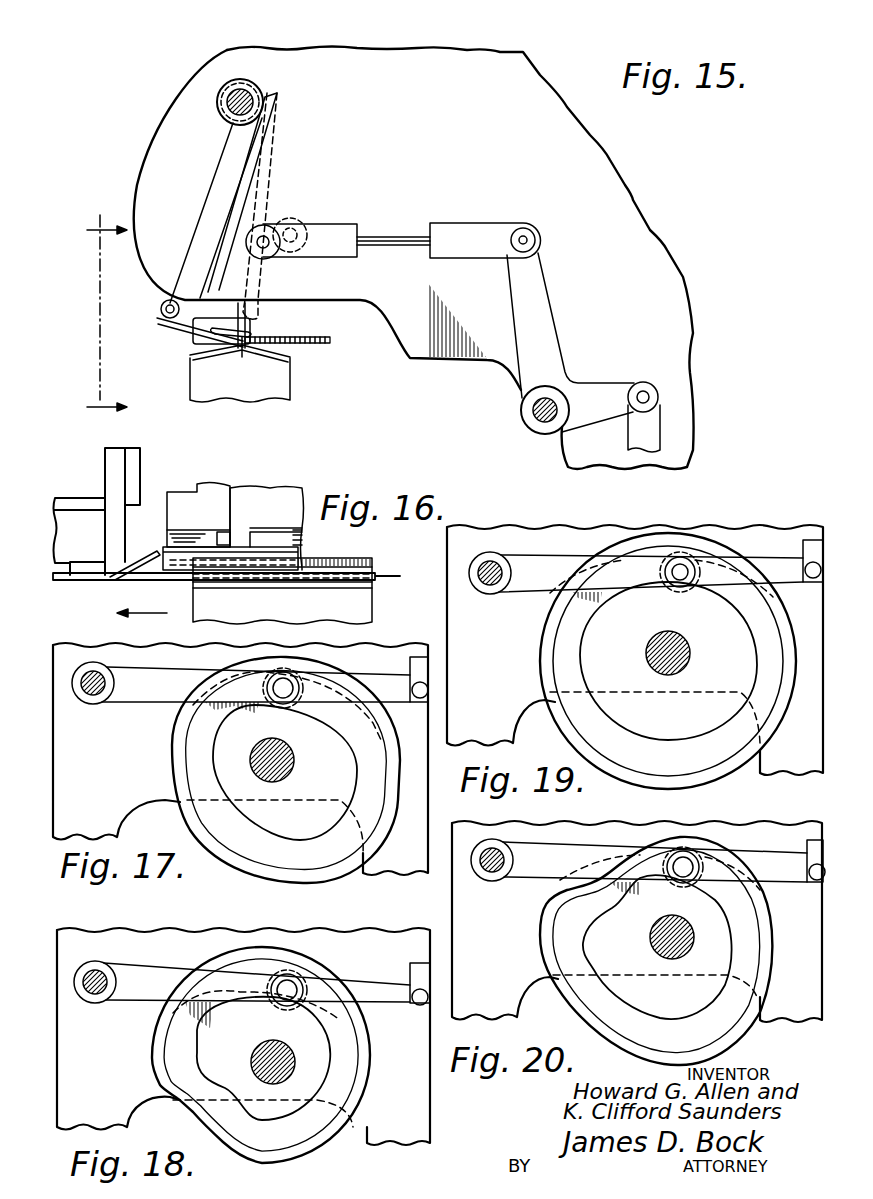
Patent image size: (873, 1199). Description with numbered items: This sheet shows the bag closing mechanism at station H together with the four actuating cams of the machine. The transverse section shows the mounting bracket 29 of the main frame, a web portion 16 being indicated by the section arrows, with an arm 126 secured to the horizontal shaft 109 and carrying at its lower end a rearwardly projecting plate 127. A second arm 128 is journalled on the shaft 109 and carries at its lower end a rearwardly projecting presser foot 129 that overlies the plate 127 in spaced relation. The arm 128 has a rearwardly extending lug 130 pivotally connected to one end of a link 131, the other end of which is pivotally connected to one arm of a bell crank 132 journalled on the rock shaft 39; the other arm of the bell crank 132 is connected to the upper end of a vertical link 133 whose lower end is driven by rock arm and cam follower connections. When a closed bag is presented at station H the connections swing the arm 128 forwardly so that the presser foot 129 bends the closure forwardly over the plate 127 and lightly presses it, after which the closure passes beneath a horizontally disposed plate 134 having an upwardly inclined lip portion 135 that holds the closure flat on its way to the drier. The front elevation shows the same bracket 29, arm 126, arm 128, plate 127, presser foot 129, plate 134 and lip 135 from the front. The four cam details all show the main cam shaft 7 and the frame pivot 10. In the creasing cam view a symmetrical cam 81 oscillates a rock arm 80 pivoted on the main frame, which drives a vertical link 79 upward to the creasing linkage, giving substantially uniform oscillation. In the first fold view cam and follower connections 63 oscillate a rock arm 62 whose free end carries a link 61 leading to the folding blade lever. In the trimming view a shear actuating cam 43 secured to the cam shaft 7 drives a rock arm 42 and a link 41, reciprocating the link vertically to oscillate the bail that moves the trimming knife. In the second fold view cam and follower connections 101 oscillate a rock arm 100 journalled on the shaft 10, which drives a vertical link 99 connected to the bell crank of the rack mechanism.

In FIG. 15, the station H is at (138, 83).
In FIG. 15, the web portion 16 is at (105, 312).
In FIG. 15, the mounting brackets 29 is at (534, 58).
In FIG. 16, the mounting brackets 29 is at (142, 453).
In FIG. 15, the horizontal shaft 109 is at (228, 107).
In FIG. 15, the arm 126 is at (210, 174).
In FIG. 16, the arm 126 is at (282, 517).
In FIG. 15, the second arm 128 is at (252, 180).
In FIG. 16, the second arm 128 is at (282, 483).
In FIG. 15, the lug 130 is at (247, 222).
In FIG. 15, the link 131 is at (394, 237).
In FIG. 15, the bell crank 132 is at (545, 318).
In FIG. 15, the vertical link 133 is at (650, 427).
In FIG. 15, the rock shaft 39 is at (540, 428).
In FIG. 15, the lip portion 135 is at (175, 298).
In FIG. 16, the lip portion 135 is at (153, 555).
In FIG. 15, the plate 127 is at (188, 328).
In FIG. 16, the plate 127 is at (193, 550).
In FIG. 15, the presser foot 129 is at (258, 300).
In FIG. 16, the presser foot 129 is at (210, 493).
In FIG. 15, the horizontally disposed plate 134 is at (196, 348).
In FIG. 16, the horizontally disposed plate 134 is at (72, 582).
In FIG. 17, the pivot 10 is at (90, 701).
In FIG. 18, the pivot 10 is at (93, 1001).
In FIG. 19, the pivot 10 is at (487, 591).
In FIG. 20, the pivot 10 is at (490, 883).
In FIG. 17, the rock arm 80 is at (141, 697).
In FIG. 17, the vertical link 79 is at (410, 667).
In FIG. 17, the cam and follower connections 81 is at (373, 720).
In FIG. 17, the main cam shaft 7 is at (291, 757).
In FIG. 18, the main cam shaft 7 is at (251, 1053).
In FIG. 19, the main cam shaft 7 is at (651, 650).
In FIG. 20, the main cam shaft 7 is at (654, 940).
In FIG. 18, the cam and follower connections 63 is at (270, 955).
In FIG. 18, the link 61 is at (410, 969).
In FIG. 18, the rock arm 62 is at (383, 1001).
In FIG. 19, the link 41 is at (803, 547).
In FIG. 19, the rock arm 42 is at (773, 578).
In FIG. 19, the shear actuating cam 43 is at (537, 652).
In FIG. 20, the rock arm 100 is at (568, 846).
In FIG. 20, the vertical link 99 is at (807, 852).
In FIG. 20, the cam and follower connections 101 is at (760, 904).